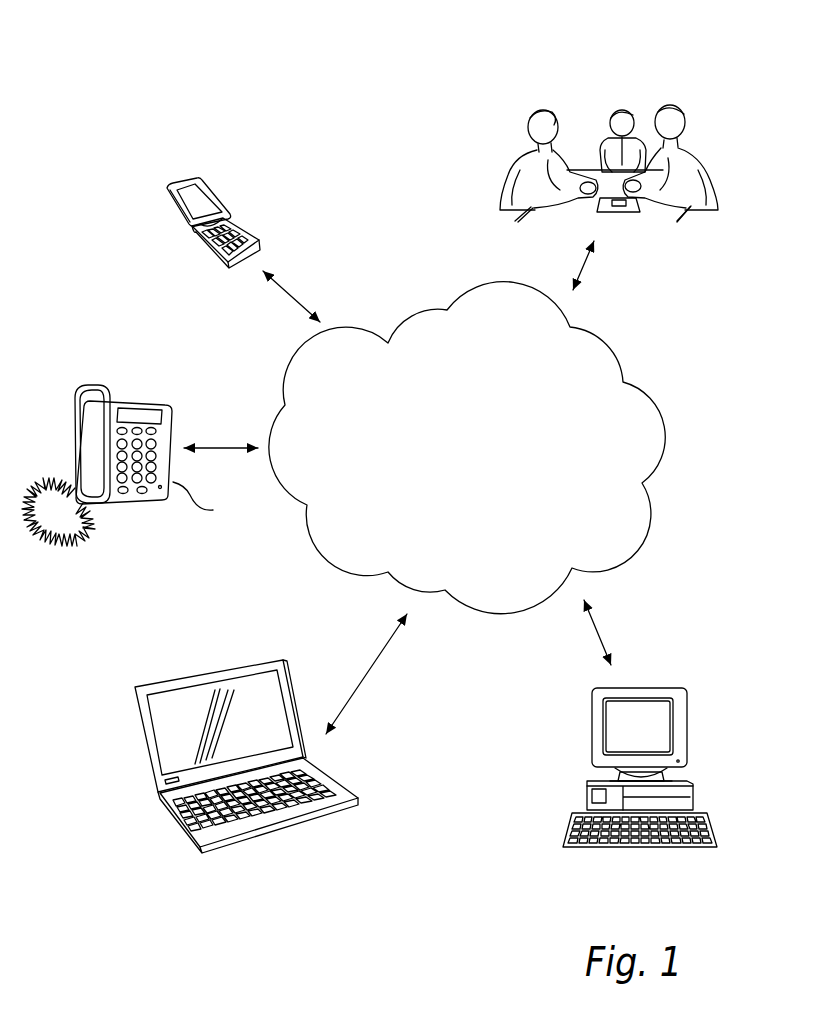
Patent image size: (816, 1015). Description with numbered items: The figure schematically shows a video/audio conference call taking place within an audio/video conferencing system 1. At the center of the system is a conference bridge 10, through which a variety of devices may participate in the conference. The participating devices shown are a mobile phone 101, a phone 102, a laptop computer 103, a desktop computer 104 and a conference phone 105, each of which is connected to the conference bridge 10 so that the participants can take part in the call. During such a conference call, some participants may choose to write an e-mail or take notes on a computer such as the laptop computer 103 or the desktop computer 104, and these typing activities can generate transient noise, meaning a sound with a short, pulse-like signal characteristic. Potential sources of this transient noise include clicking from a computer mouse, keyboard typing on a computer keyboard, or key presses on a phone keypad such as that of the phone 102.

The audio/video conferencing system 1 is at (403, 88).
The conference bridge 10 is at (493, 452).
The mobile phone 101 is at (203, 202).
The phone 102 is at (130, 402).
The laptop computer 103 is at (180, 705).
The desktop computer 104 is at (687, 720).
The conference phone 105 is at (628, 212).